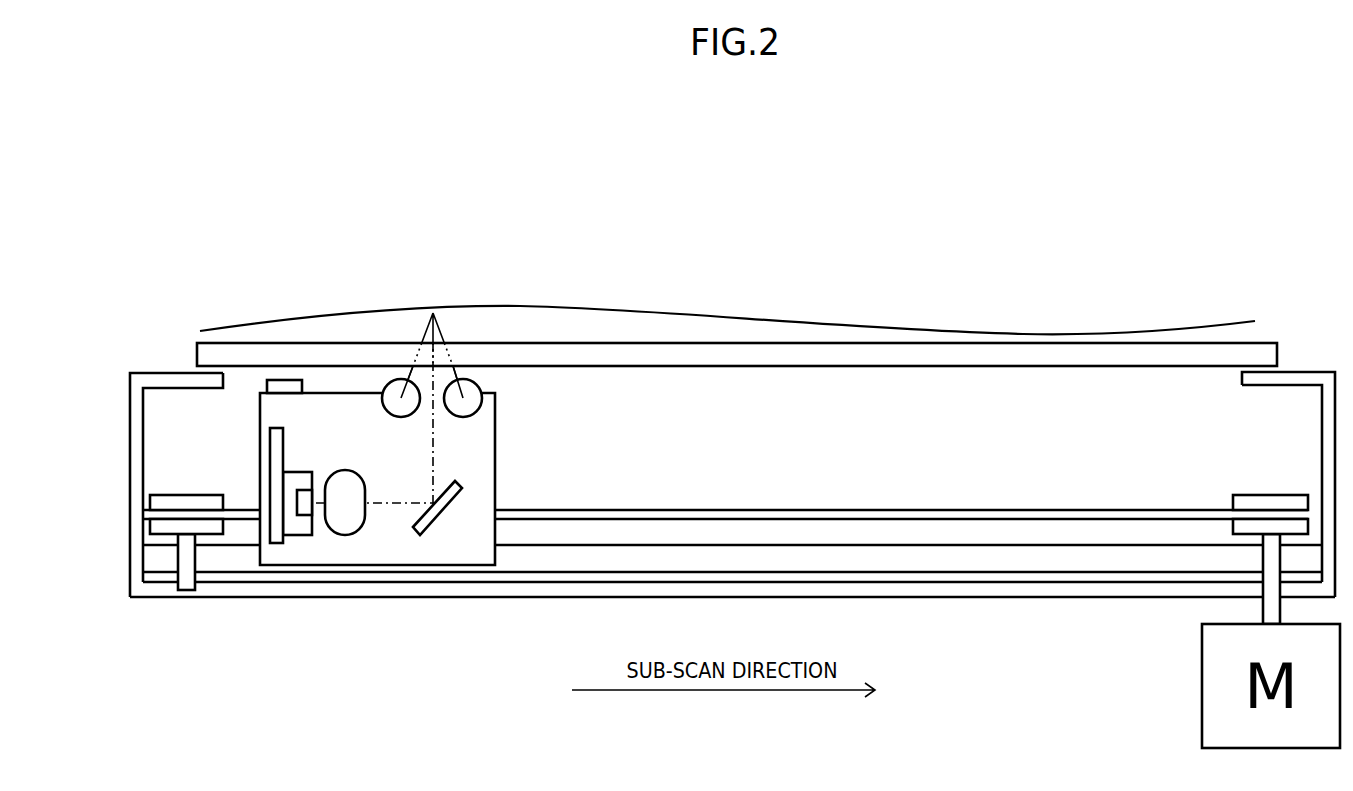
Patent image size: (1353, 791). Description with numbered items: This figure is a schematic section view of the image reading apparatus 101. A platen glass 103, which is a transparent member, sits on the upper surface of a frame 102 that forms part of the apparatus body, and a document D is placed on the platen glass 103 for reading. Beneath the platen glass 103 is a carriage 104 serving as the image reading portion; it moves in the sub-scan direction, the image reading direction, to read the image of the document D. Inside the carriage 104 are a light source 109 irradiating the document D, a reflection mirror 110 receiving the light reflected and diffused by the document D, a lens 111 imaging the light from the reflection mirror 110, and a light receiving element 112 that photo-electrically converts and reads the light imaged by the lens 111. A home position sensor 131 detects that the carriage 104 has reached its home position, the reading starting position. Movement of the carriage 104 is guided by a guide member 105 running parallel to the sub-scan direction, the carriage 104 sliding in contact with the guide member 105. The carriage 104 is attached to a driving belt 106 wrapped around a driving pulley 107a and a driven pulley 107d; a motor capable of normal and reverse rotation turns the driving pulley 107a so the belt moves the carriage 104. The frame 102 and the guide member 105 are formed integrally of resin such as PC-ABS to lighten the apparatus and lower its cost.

The image reading apparatus 101 is at (1237, 242).
The frame 102 is at (1120, 599).
The platen glass 103 is at (717, 342).
The carriage 104 is at (513, 433).
The guide member 105 is at (923, 548).
The driving belt 106 is at (990, 523).
The driven pulley 107d is at (202, 493).
The driving pulley 107a is at (1258, 493).
The light source 109 is at (408, 379).
The reflection mirror 110 is at (437, 532).
The lens 111 is at (345, 537).
The light receiving element 112 is at (292, 537).
The home position sensor 131 is at (265, 385).
The document D is at (558, 307).